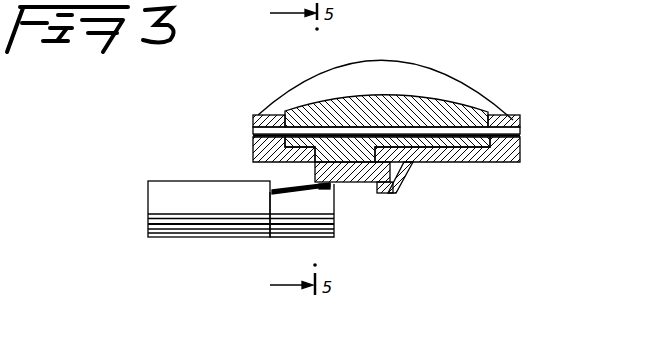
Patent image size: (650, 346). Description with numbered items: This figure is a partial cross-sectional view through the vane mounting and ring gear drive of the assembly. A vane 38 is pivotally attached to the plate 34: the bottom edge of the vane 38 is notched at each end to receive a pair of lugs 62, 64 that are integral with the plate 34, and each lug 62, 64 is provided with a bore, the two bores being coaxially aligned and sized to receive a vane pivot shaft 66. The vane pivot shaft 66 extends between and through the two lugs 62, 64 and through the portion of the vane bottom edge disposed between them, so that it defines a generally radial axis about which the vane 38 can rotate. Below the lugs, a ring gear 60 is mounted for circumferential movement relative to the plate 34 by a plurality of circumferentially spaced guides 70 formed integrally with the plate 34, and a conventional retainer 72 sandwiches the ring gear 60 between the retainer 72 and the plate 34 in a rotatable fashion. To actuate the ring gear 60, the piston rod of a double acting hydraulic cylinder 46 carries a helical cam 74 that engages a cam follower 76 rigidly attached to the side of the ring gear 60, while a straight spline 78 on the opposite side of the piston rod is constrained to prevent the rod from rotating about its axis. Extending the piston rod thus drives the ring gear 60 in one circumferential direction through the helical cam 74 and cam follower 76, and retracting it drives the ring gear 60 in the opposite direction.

The vane 38 is at (470, 78).
The lug 62 is at (258, 115).
The lug 64 is at (512, 118).
The vane pivot shaft 66 is at (521, 131).
The plate 34 is at (473, 163).
The ring gear 60 is at (358, 184).
The retainer 72 is at (388, 191).
The guide 70 is at (405, 177).
The cam follower 76 is at (333, 193).
The double acting hydraulic cylinder 46 is at (160, 200).
The helical cam 74 is at (295, 182).
The straight spline 78 is at (285, 230).